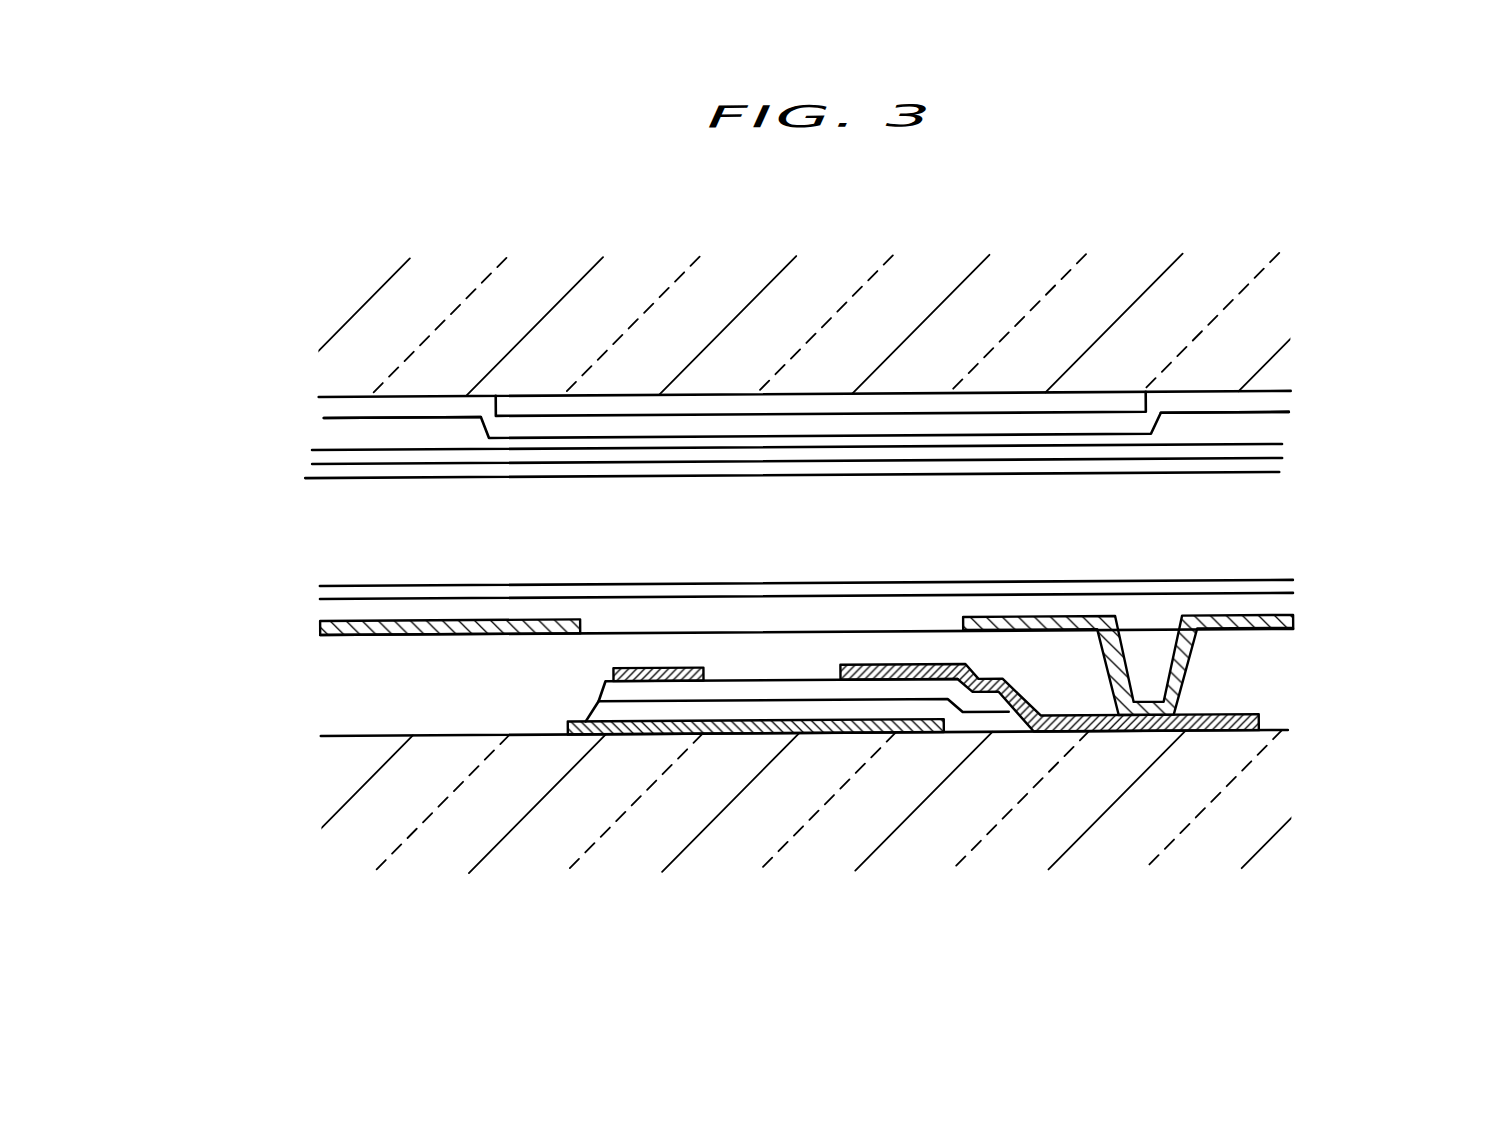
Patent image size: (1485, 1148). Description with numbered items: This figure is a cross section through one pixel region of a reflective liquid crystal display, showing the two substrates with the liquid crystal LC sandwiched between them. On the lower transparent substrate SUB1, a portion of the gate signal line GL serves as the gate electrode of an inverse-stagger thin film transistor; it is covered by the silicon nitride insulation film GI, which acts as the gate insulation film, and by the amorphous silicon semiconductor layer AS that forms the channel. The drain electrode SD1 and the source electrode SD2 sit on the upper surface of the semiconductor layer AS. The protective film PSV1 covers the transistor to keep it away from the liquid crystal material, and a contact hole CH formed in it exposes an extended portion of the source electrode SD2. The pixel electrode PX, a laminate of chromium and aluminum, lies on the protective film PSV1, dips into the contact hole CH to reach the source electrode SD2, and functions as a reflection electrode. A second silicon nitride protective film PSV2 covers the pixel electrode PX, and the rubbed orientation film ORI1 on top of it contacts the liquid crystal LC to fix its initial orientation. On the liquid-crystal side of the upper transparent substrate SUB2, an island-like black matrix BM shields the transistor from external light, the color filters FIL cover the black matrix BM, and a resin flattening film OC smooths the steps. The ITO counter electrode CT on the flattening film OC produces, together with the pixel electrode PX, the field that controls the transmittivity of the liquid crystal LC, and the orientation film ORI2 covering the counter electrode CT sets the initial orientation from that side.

The transparent substrate SUB2 is at (1268, 335).
The black matrix BM is at (618, 403).
The color filter FIL is at (1280, 400).
The flattening film OC is at (330, 432).
The counter electrode CT is at (1273, 453).
The orientation film ORI2 is at (1263, 472).
The liquid crystal LC is at (904, 533).
The orientation film ORI1 is at (347, 592).
The protective film PSV2 is at (340, 610).
The protective film PSV1 is at (1263, 672).
The pixel electrode PX is at (350, 637).
The contact hole CH is at (1145, 635).
The source electrode SD2 is at (1063, 727).
The drain electrode SD1 is at (678, 680).
The semiconductor layer AS is at (812, 687).
The insulation film GI is at (963, 715).
The gate signal line GL is at (593, 740).
The transparent substrate SUB1 is at (1270, 783).